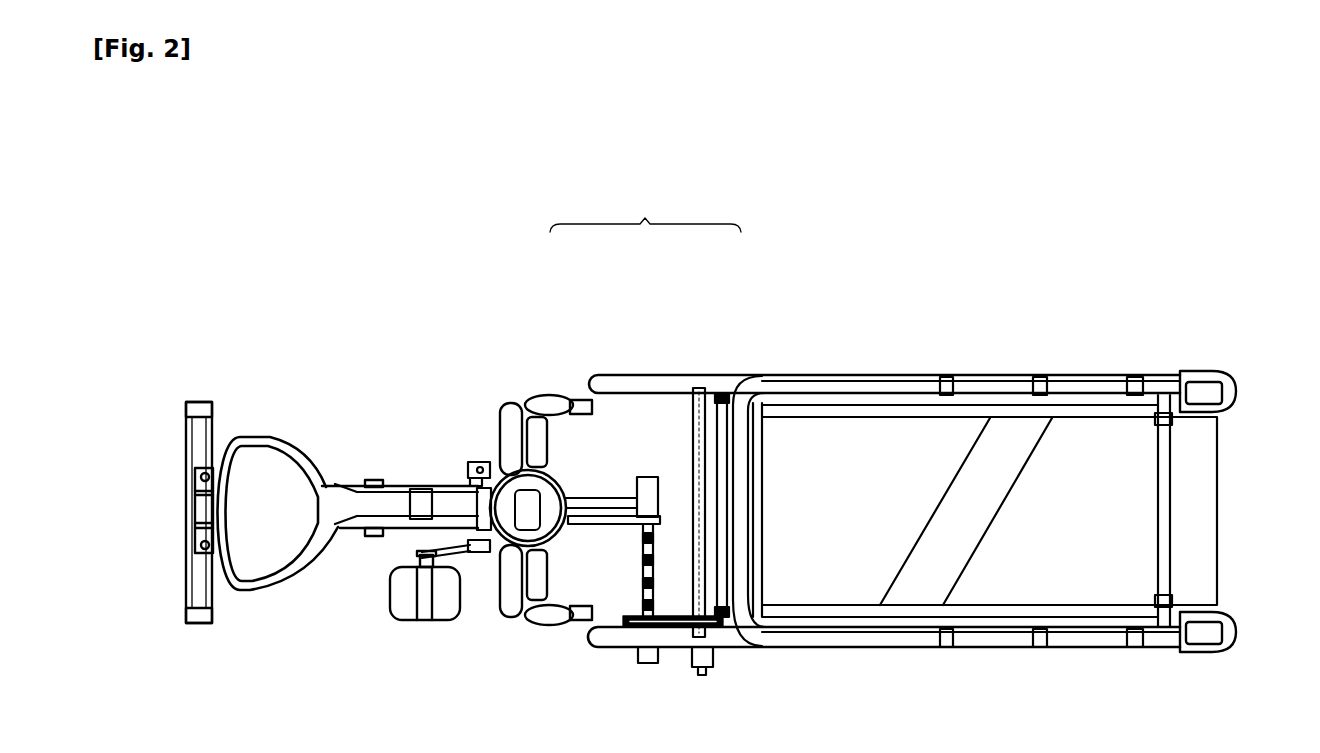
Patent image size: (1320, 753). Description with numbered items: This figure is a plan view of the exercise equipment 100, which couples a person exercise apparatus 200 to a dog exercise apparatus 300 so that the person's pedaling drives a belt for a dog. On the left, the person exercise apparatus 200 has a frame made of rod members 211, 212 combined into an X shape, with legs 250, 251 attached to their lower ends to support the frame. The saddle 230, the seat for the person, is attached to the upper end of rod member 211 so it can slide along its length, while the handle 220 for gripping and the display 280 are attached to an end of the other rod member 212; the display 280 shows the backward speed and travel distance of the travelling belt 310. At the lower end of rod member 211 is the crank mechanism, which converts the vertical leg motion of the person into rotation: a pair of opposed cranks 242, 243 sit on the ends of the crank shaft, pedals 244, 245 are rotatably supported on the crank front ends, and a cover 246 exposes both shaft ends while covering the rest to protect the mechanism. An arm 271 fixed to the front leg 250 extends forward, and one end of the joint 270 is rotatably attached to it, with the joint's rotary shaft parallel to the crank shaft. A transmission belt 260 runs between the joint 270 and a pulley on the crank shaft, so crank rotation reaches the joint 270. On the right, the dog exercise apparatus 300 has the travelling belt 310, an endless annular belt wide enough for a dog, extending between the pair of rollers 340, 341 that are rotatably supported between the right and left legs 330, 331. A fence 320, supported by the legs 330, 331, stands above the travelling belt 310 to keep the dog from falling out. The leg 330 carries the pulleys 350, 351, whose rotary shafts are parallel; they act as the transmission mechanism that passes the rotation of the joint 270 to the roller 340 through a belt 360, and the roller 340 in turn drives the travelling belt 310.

The exercise equipment 100 is at (645, 209).
The person exercise apparatus 200 is at (540, 304).
The dog exercise apparatus 300 is at (753, 305).
The travelling belt 310 is at (1079, 562).
The fence 320 is at (985, 384).
The leg 330 is at (605, 640).
The leg 331 is at (607, 386).
The roller 340 is at (720, 394).
The roller 341 is at (1226, 411).
The pulley 350 is at (710, 660).
The pulley 351 is at (645, 667).
The belt 360 is at (660, 622).
The rod member 211 is at (343, 505).
The rod member 212 is at (395, 540).
The handle 220 is at (508, 595).
The saddle 230 is at (250, 462).
The crank 242 is at (472, 555).
The crank 243 is at (472, 460).
The pedal 244 is at (405, 612).
The pedal 245 is at (505, 403).
The cover 246 is at (432, 505).
The leg 250 is at (540, 580).
The leg 251 is at (192, 592).
The transmission belt 260 is at (615, 522).
The joint 270 is at (645, 565).
The arm 271 is at (588, 500).
The display 280 is at (492, 470).